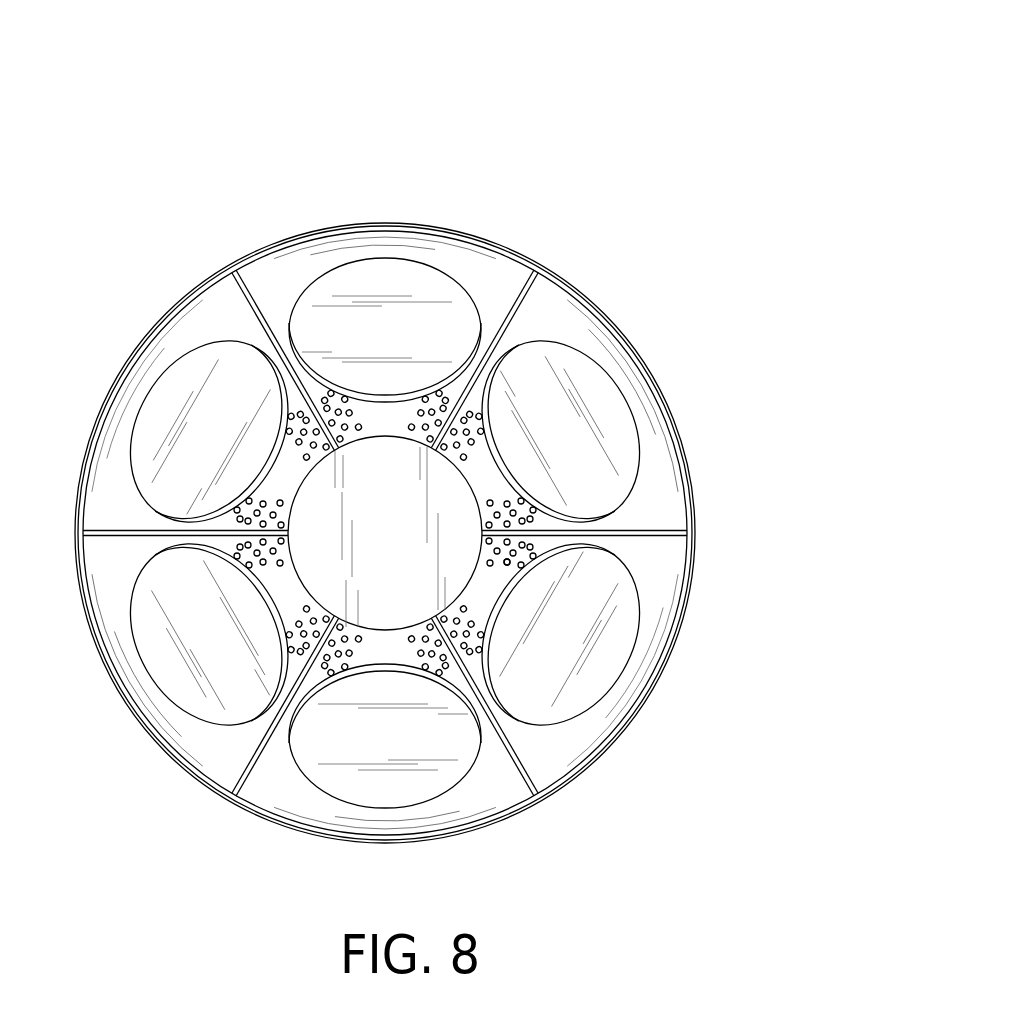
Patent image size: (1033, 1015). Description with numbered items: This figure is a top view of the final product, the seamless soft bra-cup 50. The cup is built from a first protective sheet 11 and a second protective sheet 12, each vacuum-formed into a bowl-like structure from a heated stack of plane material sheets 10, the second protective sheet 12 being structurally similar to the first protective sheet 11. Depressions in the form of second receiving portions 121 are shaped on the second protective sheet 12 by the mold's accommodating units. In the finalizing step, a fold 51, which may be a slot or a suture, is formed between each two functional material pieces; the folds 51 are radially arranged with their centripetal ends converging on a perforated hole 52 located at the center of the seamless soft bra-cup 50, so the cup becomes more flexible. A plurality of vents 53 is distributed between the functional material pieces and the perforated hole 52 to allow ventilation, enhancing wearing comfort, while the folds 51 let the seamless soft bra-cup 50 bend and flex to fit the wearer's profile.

The seamless soft bra-cup 50 is at (628, 130).
The plane material sheets 10 is at (180, 280).
The first protective sheet 11 is at (500, 247).
The second protective sheet 12 is at (263, 273).
The second receiving portions 121 is at (372, 282).
The fold 51 is at (514, 308).
The perforated hole 52 is at (470, 482).
The vents 53 is at (510, 562).